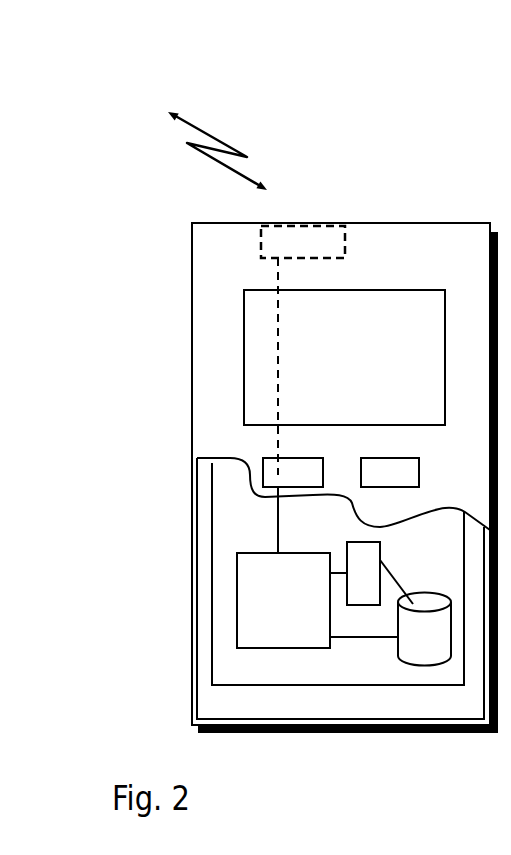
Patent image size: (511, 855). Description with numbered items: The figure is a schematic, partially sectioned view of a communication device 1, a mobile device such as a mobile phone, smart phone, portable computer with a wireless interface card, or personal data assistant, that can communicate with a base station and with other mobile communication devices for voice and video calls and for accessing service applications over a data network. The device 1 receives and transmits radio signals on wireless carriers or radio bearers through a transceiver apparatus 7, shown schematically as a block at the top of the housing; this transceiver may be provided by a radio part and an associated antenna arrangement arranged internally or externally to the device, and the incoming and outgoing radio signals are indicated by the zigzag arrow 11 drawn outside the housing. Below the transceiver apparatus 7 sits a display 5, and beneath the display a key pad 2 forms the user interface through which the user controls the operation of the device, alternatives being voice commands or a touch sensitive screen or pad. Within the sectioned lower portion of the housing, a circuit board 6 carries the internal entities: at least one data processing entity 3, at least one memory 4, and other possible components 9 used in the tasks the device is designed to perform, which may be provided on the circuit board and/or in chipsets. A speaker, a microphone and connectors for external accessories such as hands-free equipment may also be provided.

The communication device 1 is at (195, 265).
The key pad 2 is at (268, 472).
The data processing entity 3 is at (245, 584).
The memory 4 is at (418, 641).
The display 5 is at (262, 343).
The circuit board 6 is at (237, 667).
The transceiver apparatus 7 is at (288, 240).
The other possible components 9 is at (363, 557).
The wireless signal 11 is at (185, 119).